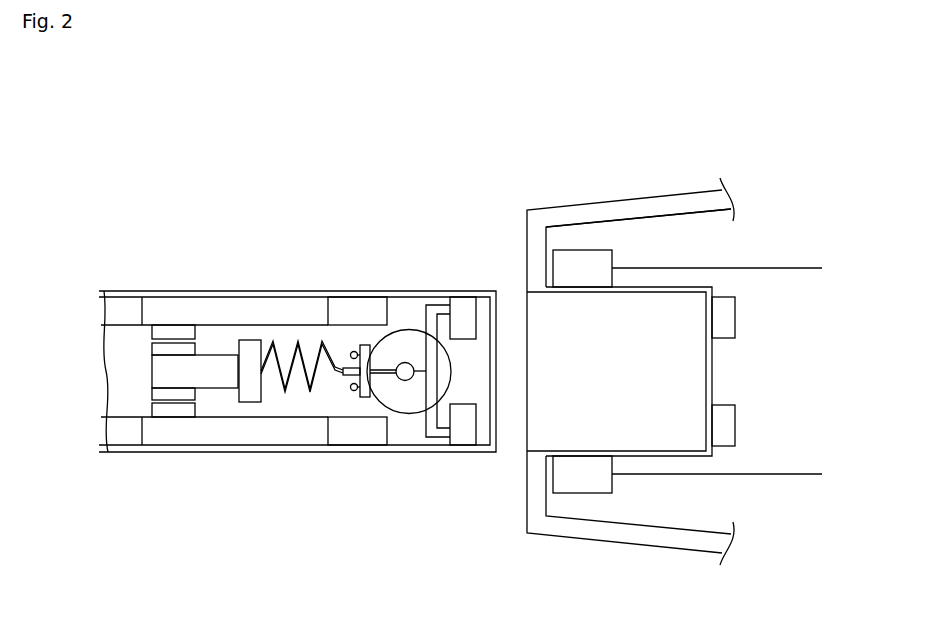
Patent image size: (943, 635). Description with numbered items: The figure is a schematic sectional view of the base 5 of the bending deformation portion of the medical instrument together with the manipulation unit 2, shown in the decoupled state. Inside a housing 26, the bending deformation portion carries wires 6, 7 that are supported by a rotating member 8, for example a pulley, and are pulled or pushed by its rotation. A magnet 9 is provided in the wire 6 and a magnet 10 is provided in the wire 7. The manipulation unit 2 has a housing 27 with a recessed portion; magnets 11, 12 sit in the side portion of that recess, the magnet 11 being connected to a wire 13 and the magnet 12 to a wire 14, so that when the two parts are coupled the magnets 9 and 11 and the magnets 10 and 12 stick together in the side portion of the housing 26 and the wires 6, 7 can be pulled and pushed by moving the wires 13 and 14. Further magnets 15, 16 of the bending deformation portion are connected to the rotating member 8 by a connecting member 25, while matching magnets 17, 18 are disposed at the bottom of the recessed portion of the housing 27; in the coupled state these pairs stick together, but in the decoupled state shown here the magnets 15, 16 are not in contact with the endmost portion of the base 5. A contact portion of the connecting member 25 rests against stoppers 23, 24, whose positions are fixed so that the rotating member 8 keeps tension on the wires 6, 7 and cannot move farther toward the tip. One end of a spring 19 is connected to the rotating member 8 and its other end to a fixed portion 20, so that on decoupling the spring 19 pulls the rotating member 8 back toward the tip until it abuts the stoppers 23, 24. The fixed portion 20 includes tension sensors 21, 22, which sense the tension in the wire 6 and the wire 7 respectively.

The manipulation unit 2 is at (822, 92).
The base 5 is at (497, 92).
The wire 6 is at (160, 325).
The wire 7 is at (124, 418).
The rotating member 8 is at (405, 400).
The magnet 9 is at (345, 308).
The magnet 10 is at (345, 435).
The magnet 11 is at (602, 257).
The magnet 12 is at (566, 482).
The wire 13 is at (683, 262).
The wire 14 is at (801, 477).
The magnet 15 is at (465, 306).
The magnet 16 is at (462, 430).
The magnet 17 is at (733, 298).
The magnet 18 is at (730, 443).
The spring 19 is at (288, 392).
The fixed portion 20 is at (250, 348).
The tension sensor 21 is at (183, 347).
The tension sensor 22 is at (173, 395).
The stopper 23 is at (353, 351).
The stopper 24 is at (352, 391).
The connecting member 25 is at (430, 350).
The housing 26 is at (130, 292).
The housing 27 is at (540, 218).